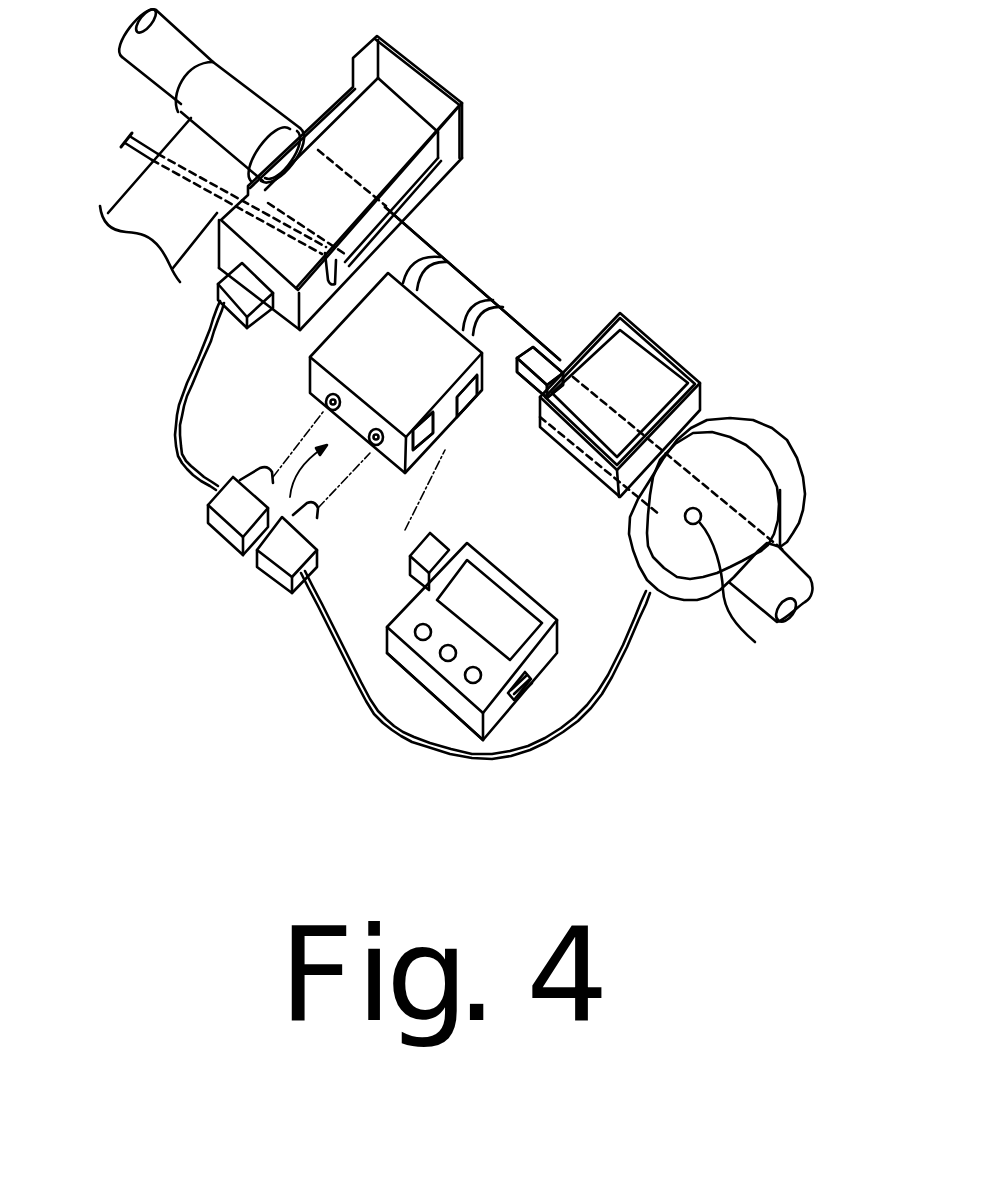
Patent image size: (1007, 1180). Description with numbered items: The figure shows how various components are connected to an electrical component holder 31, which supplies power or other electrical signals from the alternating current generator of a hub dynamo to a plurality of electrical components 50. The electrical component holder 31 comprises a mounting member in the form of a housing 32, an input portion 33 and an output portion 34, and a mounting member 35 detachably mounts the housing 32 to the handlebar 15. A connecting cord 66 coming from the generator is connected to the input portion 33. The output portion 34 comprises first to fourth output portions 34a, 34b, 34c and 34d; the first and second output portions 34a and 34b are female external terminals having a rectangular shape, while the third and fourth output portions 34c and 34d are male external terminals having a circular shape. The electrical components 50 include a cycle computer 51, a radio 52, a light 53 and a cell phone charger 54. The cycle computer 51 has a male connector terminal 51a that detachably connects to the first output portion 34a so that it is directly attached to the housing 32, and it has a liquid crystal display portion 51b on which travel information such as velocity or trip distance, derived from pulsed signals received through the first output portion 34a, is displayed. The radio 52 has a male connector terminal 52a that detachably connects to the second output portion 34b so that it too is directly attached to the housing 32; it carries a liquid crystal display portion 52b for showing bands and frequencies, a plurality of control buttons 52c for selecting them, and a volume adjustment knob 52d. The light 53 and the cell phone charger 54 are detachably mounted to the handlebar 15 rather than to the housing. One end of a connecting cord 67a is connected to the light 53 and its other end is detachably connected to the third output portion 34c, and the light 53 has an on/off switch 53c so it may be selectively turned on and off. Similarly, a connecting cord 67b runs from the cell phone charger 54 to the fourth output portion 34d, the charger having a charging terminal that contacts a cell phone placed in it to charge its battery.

The handlebar 15 is at (785, 560).
The electrical component holder 31 is at (444, 308).
The housing 32 is at (347, 350).
The input portion 33 is at (388, 250).
The output portion 34 is at (257, 557).
The first output portion 34a is at (452, 412).
The second output portion 34b is at (433, 440).
The third output portion 34c is at (376, 446).
The fourth output portion 34d is at (326, 402).
The mounting member 35 is at (445, 258).
The electrical components 50 is at (692, 233).
The cycle computer 51 is at (685, 335).
The male connector terminal 51a is at (571, 355).
The liquid crystal display portion 51b is at (662, 379).
The radio 52 is at (564, 658).
The male connector terminal 52a is at (411, 556).
The liquid crystal display portion 52b is at (496, 610).
The control buttons 52c is at (435, 663).
The volume adjustment knob 52d is at (528, 693).
The light 53 is at (820, 460).
The on/off switch 53c is at (745, 591).
The cell phone charger 54 is at (454, 63).
The connecting cord 66 is at (127, 145).
The connecting cord 67a is at (343, 660).
The connecting cord 67b is at (178, 411).